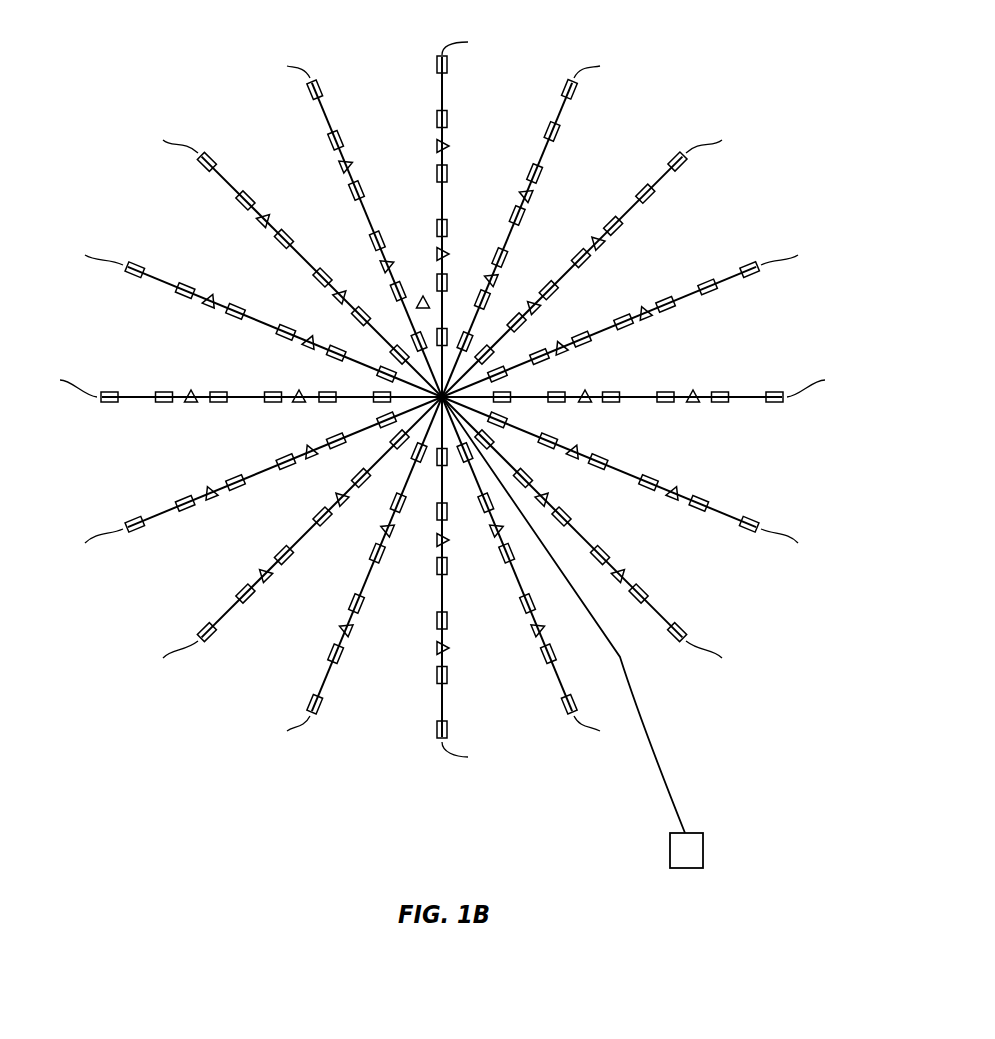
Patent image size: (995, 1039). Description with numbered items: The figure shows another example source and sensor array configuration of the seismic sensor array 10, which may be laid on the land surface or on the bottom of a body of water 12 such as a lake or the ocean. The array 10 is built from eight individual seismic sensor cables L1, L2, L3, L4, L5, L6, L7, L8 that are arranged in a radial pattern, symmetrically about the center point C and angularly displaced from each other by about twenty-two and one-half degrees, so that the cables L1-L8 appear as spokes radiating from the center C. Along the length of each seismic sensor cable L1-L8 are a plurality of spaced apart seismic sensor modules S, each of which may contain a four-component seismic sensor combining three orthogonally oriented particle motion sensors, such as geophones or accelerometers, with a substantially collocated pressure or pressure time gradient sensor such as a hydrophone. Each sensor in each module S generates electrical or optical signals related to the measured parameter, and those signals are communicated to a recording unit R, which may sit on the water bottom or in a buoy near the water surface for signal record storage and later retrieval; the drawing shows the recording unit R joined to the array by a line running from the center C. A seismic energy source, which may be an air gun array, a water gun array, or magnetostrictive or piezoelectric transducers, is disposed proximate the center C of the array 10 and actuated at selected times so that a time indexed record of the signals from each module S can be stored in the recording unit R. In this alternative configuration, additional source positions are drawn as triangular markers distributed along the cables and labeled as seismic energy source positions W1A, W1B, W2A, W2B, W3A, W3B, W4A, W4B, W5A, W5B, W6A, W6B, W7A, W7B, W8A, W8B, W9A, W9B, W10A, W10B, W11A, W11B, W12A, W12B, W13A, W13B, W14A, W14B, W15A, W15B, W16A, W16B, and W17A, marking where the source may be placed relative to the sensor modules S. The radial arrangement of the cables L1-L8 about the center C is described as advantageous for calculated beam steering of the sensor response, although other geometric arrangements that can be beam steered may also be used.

The seismic sensor module S is at (442, 399).
The seismic sensor cable L1 is at (232, 618).
The seismic sensor cable L2 is at (323, 678).
The seismic sensor cable L3 is at (446, 692).
The seismic sensor cable L4 is at (553, 665).
The seismic sensor cable L5 is at (658, 613).
The seismic sensor cable L6 is at (722, 510).
The seismic sensor cable L7 is at (748, 395).
The seismic sensor cable L8 is at (730, 287).
The center point C is at (442, 400).
The recording unit R is at (703, 852).
The body of water 12 is at (863, 743).
The seismic sensor array 10 is at (122, 807).
The well W1A is at (423, 292).
The well W1B is at (340, 503).
The well W2A is at (270, 578).
The well W2B is at (382, 528).
The well W3A is at (349, 629).
The well W3B is at (438, 540).
The well W4A is at (436, 650).
The well W4B is at (497, 535).
The well W5A is at (538, 640).
The well W5B is at (548, 495).
The well W6A is at (617, 572).
The well W6B is at (578, 445).
The well W7A is at (673, 500).
The well W7B is at (587, 387).
The well W8A is at (696, 406).
The well W8B is at (562, 340).
The well W9A is at (646, 320).
The well W9B is at (530, 298).
The well W10A is at (603, 242).
The well W10B is at (491, 275).
The well W11A is at (540, 197).
The well W11B is at (447, 253).
The well W12A is at (440, 146).
The well W12B is at (384, 268).
The well W13A is at (340, 168).
The well W13B is at (338, 299).
The well W14A is at (262, 222).
The well W14B is at (310, 350).
The well W15A is at (210, 308).
The well W15B is at (297, 406).
The well W16A is at (190, 404).
The well W16B is at (313, 460).
The well W17A is at (206, 497).